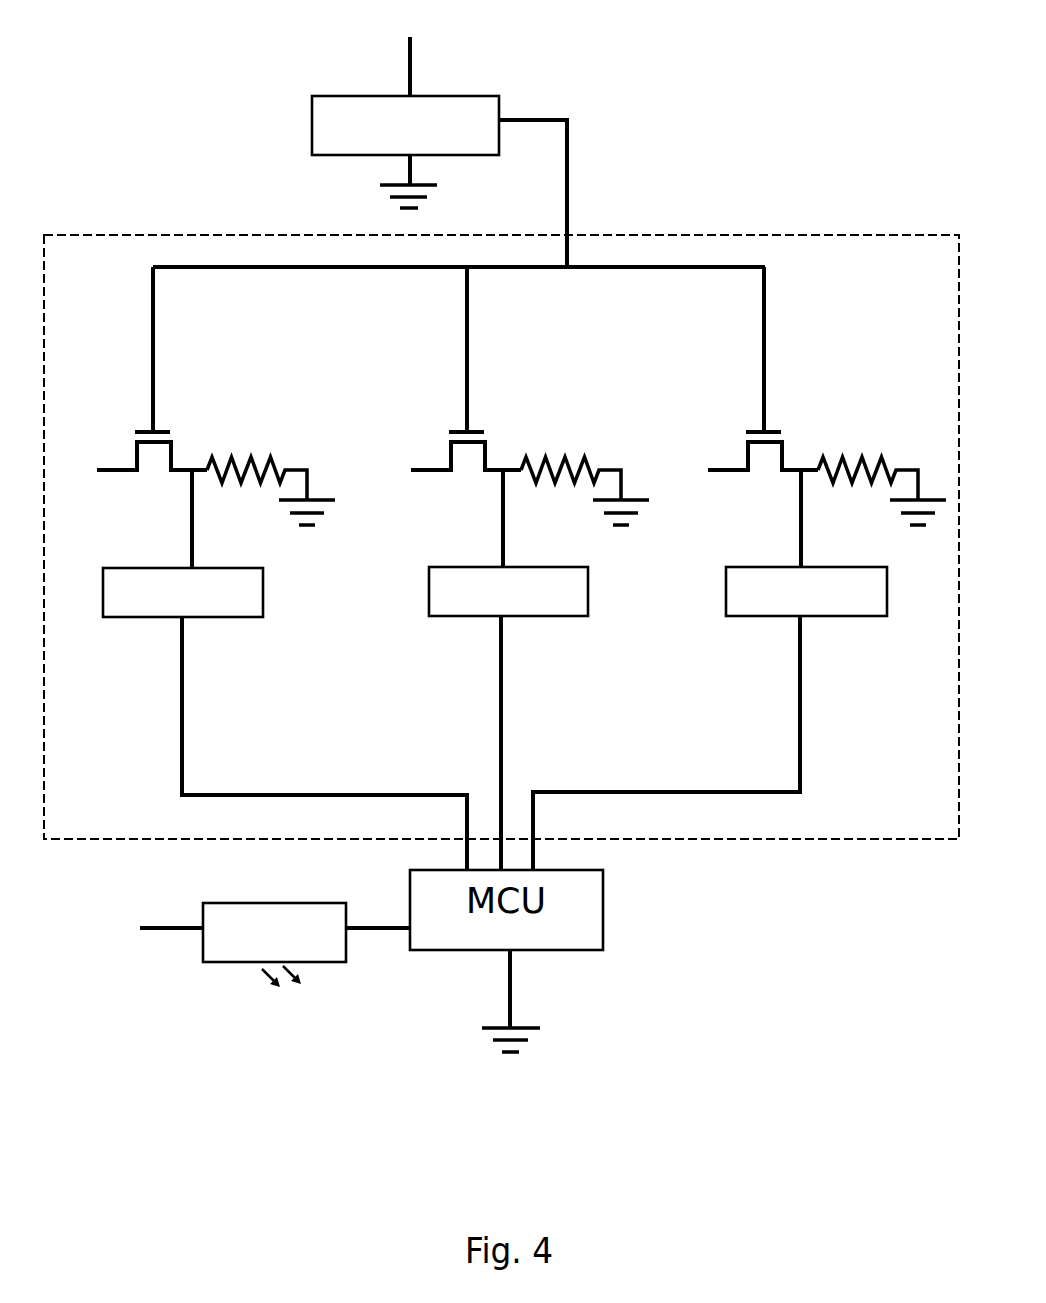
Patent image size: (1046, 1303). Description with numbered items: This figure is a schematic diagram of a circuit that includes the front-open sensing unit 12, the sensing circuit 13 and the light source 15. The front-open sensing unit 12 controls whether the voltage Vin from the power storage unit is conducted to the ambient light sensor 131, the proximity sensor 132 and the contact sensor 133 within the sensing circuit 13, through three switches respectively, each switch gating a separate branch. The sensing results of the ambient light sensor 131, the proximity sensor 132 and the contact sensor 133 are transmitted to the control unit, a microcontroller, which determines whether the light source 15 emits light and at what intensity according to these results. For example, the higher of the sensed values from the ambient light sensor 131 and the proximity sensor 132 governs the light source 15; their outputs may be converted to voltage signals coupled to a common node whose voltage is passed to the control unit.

The front-open sensing unit 12 is at (385, 145).
The sensing circuit 13 is at (878, 826).
The ambient light sensor 131 is at (160, 609).
The proximity sensor 132 is at (485, 608).
The contact sensor 133 is at (783, 608).
The light source 15 is at (255, 945).